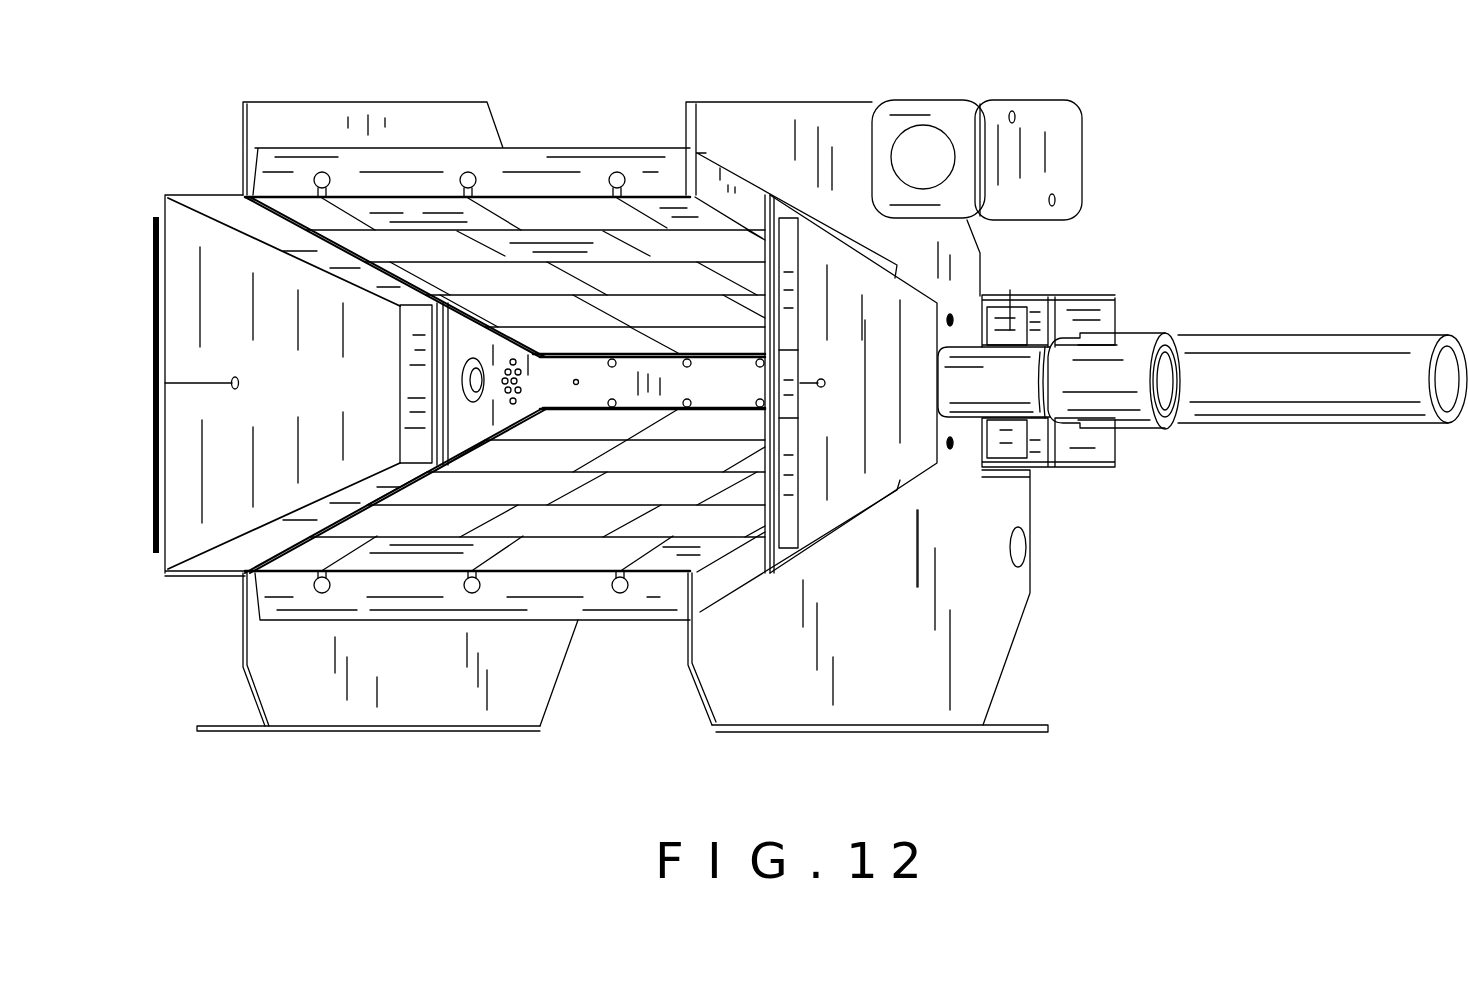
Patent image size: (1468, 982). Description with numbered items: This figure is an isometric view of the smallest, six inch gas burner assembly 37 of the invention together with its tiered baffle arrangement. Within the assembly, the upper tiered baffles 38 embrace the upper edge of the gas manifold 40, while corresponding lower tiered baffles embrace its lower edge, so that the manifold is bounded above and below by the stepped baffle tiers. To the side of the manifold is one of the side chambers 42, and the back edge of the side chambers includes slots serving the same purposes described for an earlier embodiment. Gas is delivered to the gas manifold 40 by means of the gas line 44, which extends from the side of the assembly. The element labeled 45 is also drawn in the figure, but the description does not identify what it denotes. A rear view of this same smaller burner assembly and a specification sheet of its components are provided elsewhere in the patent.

The gas burner assembly 37 is at (214, 166).
The upper tiered baffles 38 is at (431, 240).
The gas manifold 40 is at (744, 398).
The side chamber 42 is at (838, 494).
The gas line 44 is at (1283, 337).
The inner plate 45 is at (417, 382).